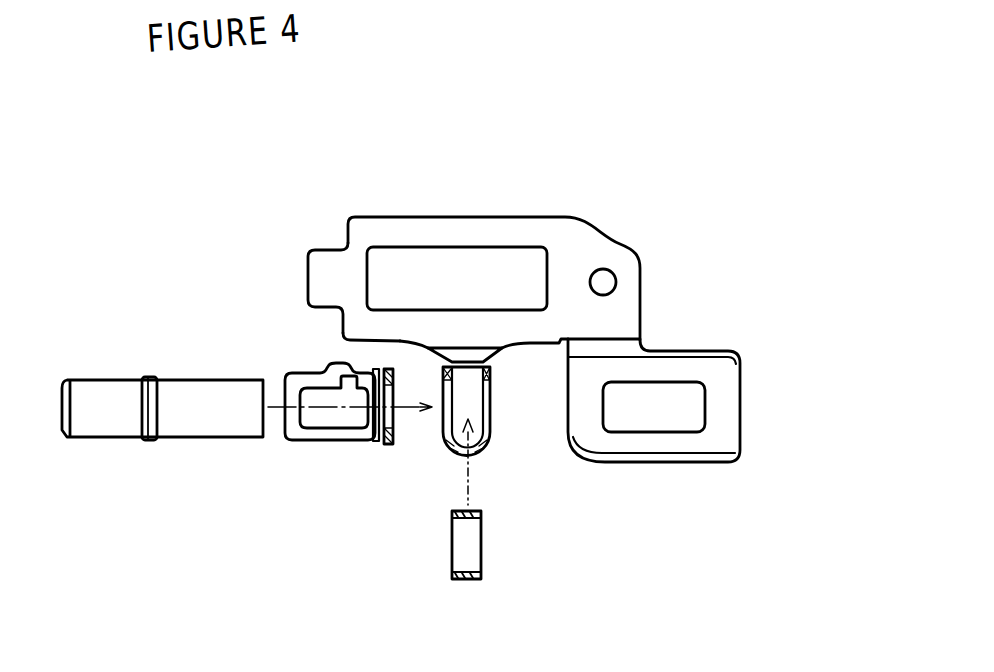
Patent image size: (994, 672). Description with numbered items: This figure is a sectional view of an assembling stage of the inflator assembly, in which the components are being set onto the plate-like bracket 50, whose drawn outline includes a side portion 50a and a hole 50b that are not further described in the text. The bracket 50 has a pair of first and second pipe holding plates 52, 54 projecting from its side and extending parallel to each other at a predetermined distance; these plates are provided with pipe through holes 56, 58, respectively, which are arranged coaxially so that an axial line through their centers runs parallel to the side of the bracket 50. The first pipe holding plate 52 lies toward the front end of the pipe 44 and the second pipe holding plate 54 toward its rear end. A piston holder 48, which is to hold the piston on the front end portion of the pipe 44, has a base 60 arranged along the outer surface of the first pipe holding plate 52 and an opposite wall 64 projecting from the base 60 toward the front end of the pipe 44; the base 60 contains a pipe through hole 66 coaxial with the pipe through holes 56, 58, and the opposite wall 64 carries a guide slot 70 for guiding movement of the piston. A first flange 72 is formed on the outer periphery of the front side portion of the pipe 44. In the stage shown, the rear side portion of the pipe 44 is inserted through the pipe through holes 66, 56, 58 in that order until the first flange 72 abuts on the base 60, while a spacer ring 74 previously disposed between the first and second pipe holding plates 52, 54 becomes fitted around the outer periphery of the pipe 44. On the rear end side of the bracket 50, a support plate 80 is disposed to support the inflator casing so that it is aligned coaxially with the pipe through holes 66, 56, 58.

The pipe 44 is at (72, 396).
The piston holder 48 is at (286, 464).
The bracket 50 is at (426, 237).
The notch of bracket plate 50a is at (303, 270).
The hole in bracket plate 50b is at (603, 282).
The first pipe holding plate 52 is at (445, 448).
The second pipe holding plate 54 is at (493, 449).
The pipe through hole 56 is at (427, 398).
The pipe through hole 58 is at (490, 402).
The base 60 is at (429, 347).
The opposite wall 64 is at (283, 378).
The pipe through hole 66 is at (374, 427).
The guide slot 70 is at (324, 389).
The first flange 72 is at (150, 377).
The spacer ring 74 is at (482, 540).
The support plate 80 is at (723, 386).